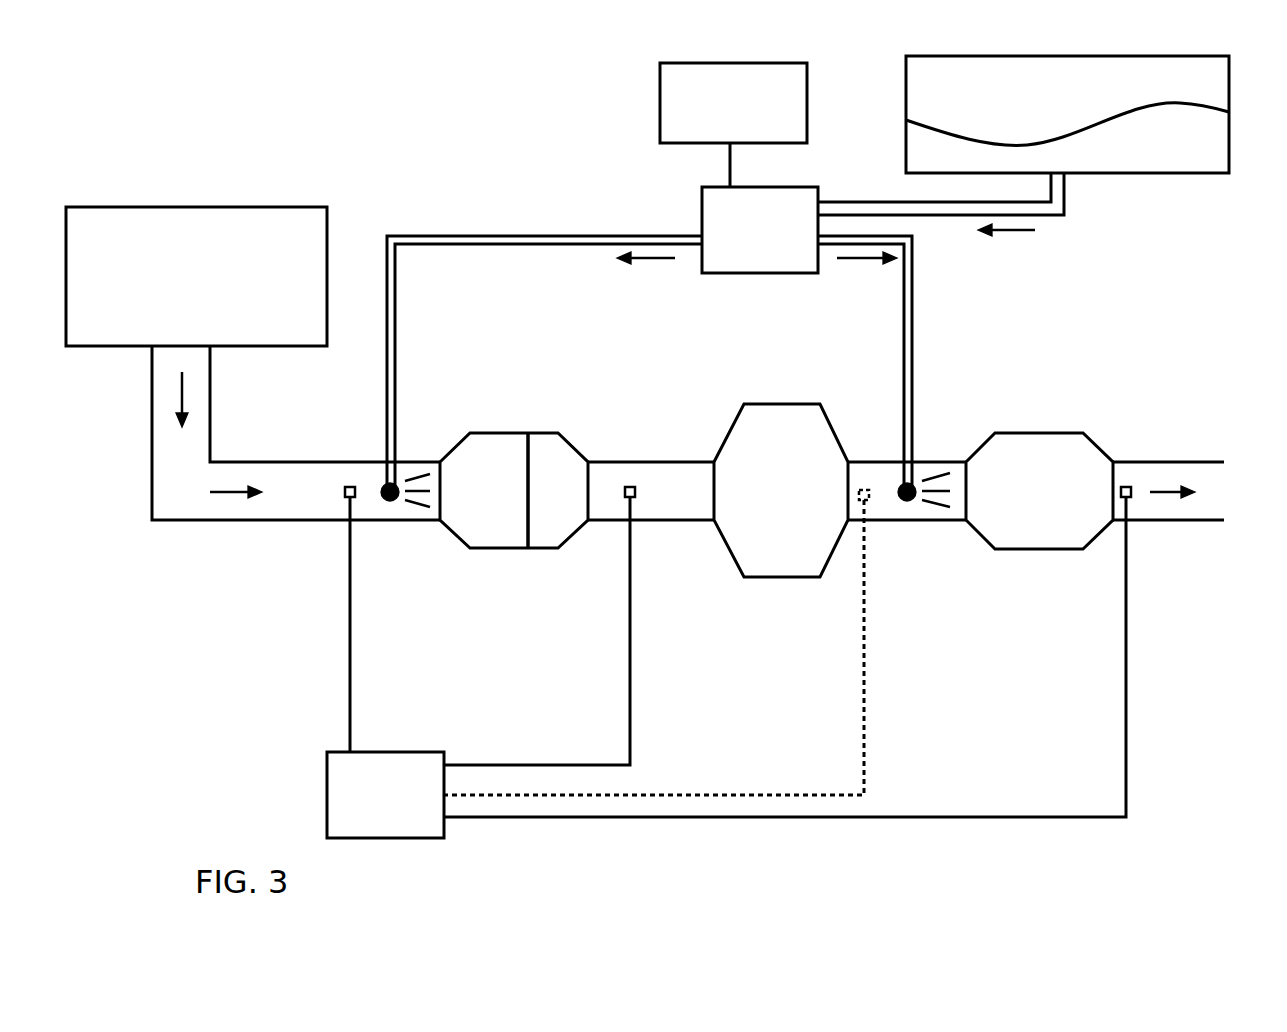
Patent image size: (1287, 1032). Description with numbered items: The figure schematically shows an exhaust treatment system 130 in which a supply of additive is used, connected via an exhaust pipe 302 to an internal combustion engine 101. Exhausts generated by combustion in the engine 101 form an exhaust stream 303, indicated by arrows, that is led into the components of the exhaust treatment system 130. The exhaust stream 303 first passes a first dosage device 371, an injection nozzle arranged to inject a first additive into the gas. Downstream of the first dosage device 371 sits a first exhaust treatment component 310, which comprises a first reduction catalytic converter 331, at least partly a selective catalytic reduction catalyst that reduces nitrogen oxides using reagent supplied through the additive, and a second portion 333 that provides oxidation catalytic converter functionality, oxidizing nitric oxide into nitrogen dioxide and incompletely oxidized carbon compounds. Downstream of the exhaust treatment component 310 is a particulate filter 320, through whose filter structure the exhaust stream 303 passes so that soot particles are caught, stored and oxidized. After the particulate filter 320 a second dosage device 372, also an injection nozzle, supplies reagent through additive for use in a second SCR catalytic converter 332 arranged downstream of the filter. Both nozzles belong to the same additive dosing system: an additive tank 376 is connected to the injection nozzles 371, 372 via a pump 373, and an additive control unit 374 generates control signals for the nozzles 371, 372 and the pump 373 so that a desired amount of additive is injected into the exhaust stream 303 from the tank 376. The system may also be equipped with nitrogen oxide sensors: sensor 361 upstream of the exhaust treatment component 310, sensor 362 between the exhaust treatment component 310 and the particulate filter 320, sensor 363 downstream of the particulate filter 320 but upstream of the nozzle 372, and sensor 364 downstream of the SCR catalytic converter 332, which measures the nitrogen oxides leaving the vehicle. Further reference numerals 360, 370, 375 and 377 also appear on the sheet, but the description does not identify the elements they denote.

The internal combustion engine 101 is at (196, 276).
The exhaust treatment system 130 is at (1151, 653).
The exhaust pipe 302 is at (152, 435).
The exhaust stream 303 is at (220, 497).
The first exhaust treatment component 310 is at (516, 421).
The particulate filter 320 is at (760, 562).
The first reduction catalytic converter 331 is at (480, 523).
The second SCR catalytic converter 332 is at (1045, 530).
The second portion of the exhaust treatment component 333 is at (560, 523).
The controller 360 is at (385, 795).
The NOx sensor 361 is at (350, 486).
The NOx sensor 362 is at (630, 486).
The NOx sensor 363 is at (864, 490).
The NOx sensor 364 is at (1126, 486).
The reductant dosing system 370 is at (573, 120).
The first dosage device 371 is at (392, 502).
The second dosage device 372 is at (922, 500).
The pump 373 is at (760, 230).
The additive control unit 374 is at (733, 125).
The reductant supply lines 375 is at (648, 265).
The additive tank 376 is at (1067, 114).
The tank supply line 377 is at (1066, 205).